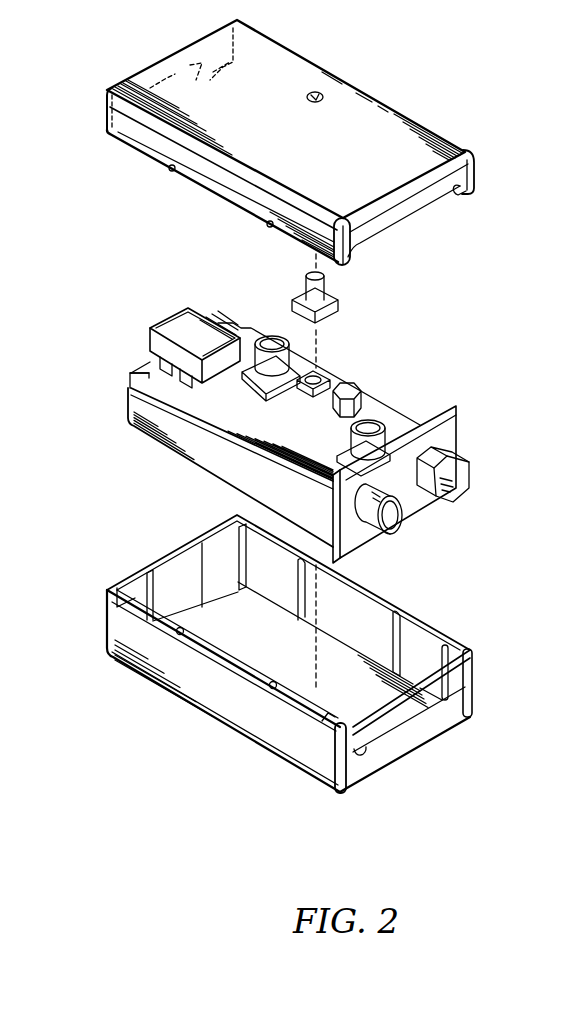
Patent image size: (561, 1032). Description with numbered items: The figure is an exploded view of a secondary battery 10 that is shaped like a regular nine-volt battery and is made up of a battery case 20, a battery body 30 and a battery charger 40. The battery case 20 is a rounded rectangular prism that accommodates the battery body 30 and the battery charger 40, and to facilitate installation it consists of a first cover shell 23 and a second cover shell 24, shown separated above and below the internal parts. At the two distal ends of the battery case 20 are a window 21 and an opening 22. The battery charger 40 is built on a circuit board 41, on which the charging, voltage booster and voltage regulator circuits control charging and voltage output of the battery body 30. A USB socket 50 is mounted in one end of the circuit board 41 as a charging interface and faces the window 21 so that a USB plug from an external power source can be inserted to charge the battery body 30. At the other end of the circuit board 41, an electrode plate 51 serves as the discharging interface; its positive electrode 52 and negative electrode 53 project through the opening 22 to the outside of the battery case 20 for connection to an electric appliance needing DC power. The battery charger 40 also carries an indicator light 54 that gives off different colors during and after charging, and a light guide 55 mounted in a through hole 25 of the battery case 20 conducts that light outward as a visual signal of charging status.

The secondary battery 10 is at (80, 6).
The battery case 20 is at (182, 705).
The window 21 is at (158, 80).
The opening 22 is at (368, 750).
The first cover shell 23 is at (240, 720).
The second cover shell 24 is at (388, 127).
The through hole 25 is at (317, 92).
The battery body 30 is at (171, 437).
The battery charger 40 is at (393, 405).
The circuit board 41 is at (147, 373).
The USB socket 50 is at (182, 330).
The electrode plate 51 is at (410, 507).
The positive electrode 52 is at (389, 536).
The negative electrode 53 is at (460, 497).
The indicator light 54 is at (322, 378).
The light guide 55 is at (323, 288).